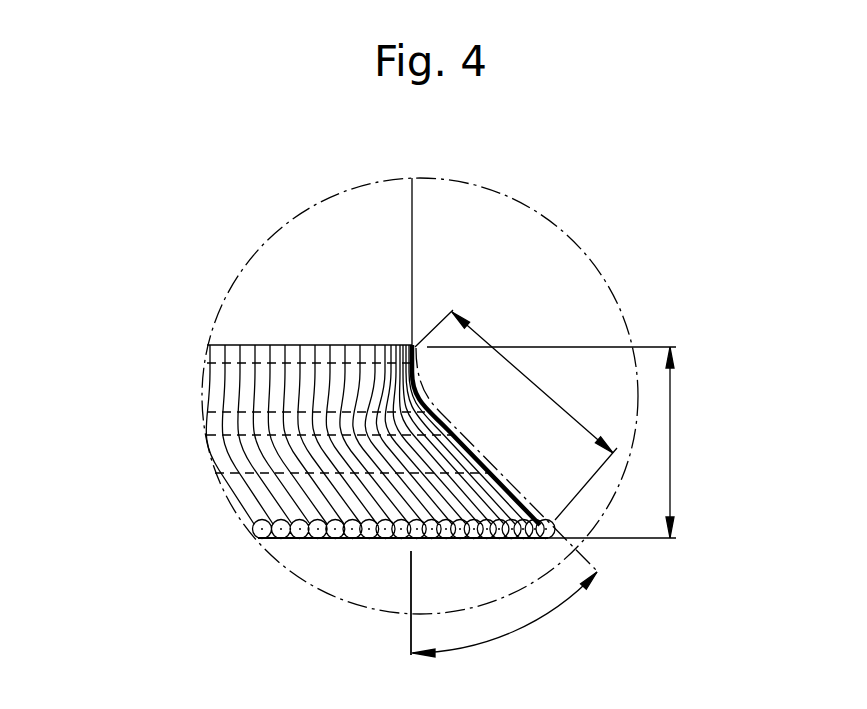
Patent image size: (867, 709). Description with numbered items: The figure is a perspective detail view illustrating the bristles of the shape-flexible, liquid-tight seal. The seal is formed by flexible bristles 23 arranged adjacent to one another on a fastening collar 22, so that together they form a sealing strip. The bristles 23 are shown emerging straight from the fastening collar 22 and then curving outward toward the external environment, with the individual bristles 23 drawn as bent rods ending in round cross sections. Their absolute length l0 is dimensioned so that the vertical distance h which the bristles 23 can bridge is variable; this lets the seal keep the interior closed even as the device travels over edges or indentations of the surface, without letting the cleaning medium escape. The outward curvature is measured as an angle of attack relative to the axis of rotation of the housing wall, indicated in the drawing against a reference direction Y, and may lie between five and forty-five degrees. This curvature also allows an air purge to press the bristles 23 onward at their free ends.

The fastening collar 22 is at (248, 302).
The bristles 23 is at (253, 503).
The absolute length of the bristles l0 is at (516, 415).
The vertical distance h is at (560, 442).
The Y axis direction Y is at (396, 610).